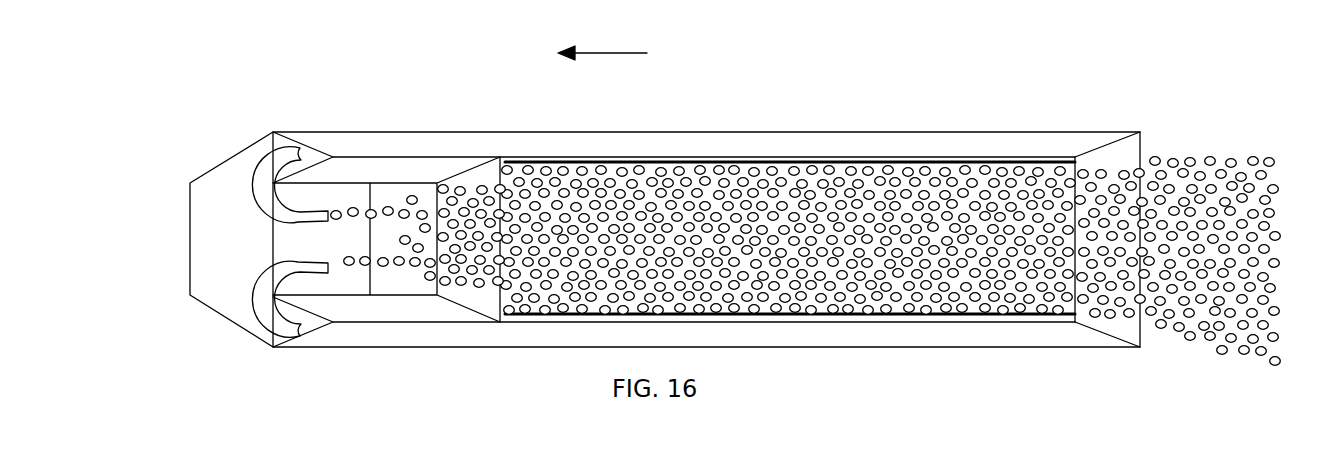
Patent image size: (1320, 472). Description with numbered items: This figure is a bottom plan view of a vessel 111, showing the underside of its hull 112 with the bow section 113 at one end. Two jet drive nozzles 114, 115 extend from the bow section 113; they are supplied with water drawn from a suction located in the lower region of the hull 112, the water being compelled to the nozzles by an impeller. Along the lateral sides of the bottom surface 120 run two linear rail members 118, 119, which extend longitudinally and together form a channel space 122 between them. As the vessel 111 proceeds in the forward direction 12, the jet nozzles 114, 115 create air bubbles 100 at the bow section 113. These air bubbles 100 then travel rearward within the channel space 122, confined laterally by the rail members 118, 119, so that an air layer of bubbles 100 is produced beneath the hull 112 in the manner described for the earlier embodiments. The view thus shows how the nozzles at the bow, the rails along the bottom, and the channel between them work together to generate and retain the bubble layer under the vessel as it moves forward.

The forward direction 12 is at (647, 53).
The air bubbles 100 is at (432, 205).
The vessel 111 is at (665, 224).
The hull 112 is at (582, 143).
The bow section 113 is at (362, 130).
The jet drive nozzle 114 is at (308, 193).
The jet drive nozzle 115 is at (305, 335).
The linear rail member 118 is at (732, 163).
The linear rail member 119 is at (828, 317).
The bottom surface 120 is at (1043, 170).
The channel space 122 is at (867, 200).